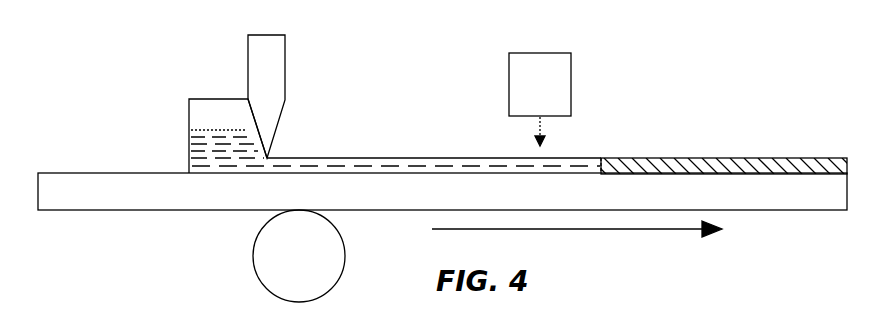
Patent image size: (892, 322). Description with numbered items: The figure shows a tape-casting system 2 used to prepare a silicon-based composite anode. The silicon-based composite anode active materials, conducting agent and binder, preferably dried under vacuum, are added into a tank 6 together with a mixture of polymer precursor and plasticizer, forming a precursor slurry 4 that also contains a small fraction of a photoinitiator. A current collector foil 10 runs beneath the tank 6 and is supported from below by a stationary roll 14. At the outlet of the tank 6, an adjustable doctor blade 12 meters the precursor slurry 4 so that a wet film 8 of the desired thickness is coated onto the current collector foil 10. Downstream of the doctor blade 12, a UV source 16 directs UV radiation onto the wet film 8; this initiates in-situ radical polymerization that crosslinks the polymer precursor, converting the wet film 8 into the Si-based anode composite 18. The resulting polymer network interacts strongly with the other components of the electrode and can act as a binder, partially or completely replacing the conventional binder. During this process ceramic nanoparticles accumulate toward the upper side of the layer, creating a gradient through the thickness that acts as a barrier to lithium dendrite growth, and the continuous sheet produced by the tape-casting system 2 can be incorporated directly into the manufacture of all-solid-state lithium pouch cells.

The tape-casting system 2 is at (664, 90).
The precursor slurry 4 is at (193, 150).
The tank 6 is at (186, 100).
The wet film 8 is at (365, 167).
The current collector foil 10 is at (102, 185).
The adjustable doctor blade 12 is at (285, 65).
The stationary roll 14 is at (338, 243).
The UV source 16 is at (556, 97).
The Si-based anode composite 18 is at (767, 157).